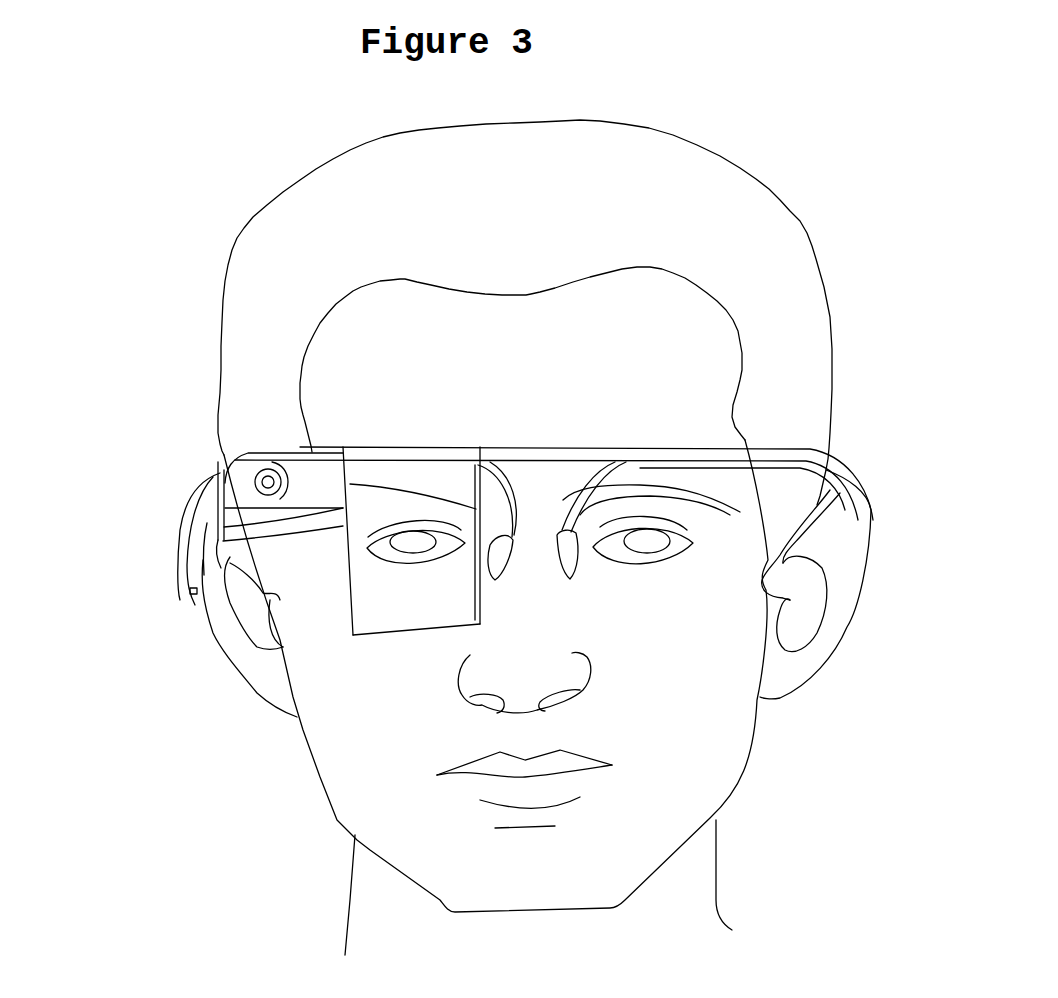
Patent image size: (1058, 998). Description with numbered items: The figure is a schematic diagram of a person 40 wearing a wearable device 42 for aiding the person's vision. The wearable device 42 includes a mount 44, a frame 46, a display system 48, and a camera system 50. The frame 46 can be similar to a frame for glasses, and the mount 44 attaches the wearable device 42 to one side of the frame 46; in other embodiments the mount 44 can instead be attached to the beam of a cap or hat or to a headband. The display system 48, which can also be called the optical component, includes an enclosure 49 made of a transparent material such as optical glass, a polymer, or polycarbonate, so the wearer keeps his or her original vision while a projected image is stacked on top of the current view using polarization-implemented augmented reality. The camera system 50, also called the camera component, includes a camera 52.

The person 40 is at (840, 197).
The wearable device 42 is at (125, 658).
The mount 44 is at (195, 527).
The frame 46 is at (685, 448).
The display system 48 is at (339, 576).
The enclosure 49 is at (323, 641).
The camera system 50 is at (298, 464).
The camera 52 is at (245, 476).